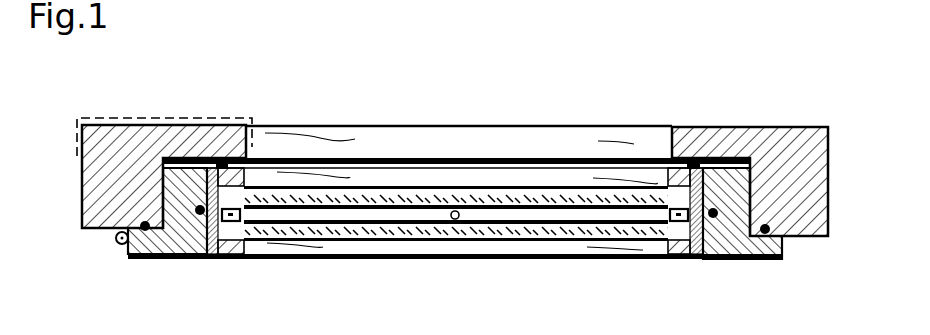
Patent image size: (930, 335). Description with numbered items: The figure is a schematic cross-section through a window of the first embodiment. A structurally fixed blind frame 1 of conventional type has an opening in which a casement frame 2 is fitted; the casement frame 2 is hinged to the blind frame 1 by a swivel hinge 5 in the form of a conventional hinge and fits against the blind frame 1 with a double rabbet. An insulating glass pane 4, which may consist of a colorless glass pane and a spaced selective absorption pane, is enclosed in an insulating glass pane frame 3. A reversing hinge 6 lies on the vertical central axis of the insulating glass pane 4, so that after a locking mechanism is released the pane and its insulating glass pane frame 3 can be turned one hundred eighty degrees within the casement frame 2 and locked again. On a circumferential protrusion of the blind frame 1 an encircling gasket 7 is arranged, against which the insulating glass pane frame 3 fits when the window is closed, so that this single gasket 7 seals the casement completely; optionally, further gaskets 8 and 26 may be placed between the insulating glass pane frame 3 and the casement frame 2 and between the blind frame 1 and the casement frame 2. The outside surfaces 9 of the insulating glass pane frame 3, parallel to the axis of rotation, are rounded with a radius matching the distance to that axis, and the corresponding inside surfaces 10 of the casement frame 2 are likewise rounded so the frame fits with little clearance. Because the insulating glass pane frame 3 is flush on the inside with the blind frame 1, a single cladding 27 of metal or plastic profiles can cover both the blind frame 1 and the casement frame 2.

The blind frame 1 is at (790, 150).
The casement frame 2 is at (733, 234).
The insulating glass pane frame 3 is at (690, 259).
The insulating glass pane 4 is at (553, 218).
The swivel hinge 5 is at (120, 244).
The reversing hinge 6 is at (457, 211).
The encircling gasket 7 is at (693, 157).
The further gasket 8 is at (197, 259).
The outside surfaces 9 is at (200, 205).
The inside surfaces 10 is at (715, 209).
The further gasket 26 is at (146, 231).
The cladding 27 is at (120, 118).